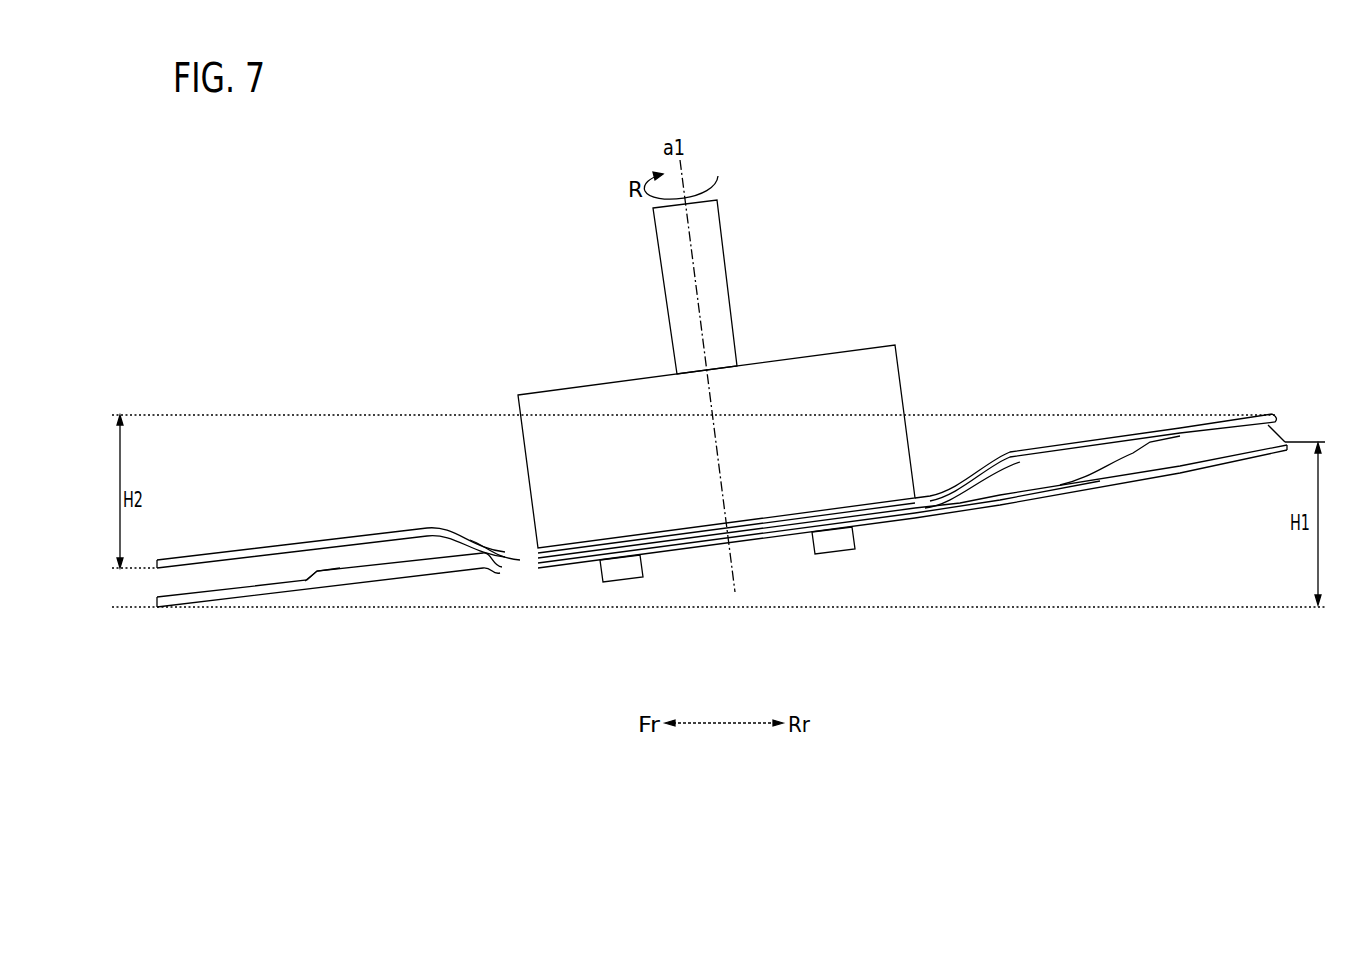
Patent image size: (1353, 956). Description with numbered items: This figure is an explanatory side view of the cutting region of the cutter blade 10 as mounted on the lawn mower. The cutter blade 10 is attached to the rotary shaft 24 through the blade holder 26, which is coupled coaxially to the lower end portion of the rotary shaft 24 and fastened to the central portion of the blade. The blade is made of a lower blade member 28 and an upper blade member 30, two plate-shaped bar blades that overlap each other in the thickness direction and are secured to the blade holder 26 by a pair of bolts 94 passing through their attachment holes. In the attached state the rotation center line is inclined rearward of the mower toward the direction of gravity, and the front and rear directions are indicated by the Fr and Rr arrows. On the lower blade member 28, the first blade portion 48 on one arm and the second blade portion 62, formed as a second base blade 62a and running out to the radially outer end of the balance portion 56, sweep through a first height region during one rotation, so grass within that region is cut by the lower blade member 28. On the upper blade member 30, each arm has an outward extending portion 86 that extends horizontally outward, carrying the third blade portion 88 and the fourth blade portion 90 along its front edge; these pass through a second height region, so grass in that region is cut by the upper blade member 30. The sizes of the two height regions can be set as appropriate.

The cutter blade 10 is at (282, 518).
The rotary shaft 24 is at (725, 247).
The blade holder 26 is at (805, 370).
The lower blade member 28 is at (329, 635).
The upper blade member 30 is at (338, 520).
The first blade portion 48 is at (1185, 473).
The balance portion 56 is at (225, 603).
The second blade portion 62 is at (258, 603).
The second base blade 62a is at (340, 592).
The outward extending portion 86 is at (195, 553).
The third blade portion 88 is at (1190, 427).
The fourth blade portion 90 is at (307, 545).
The bolts 94 is at (622, 575).